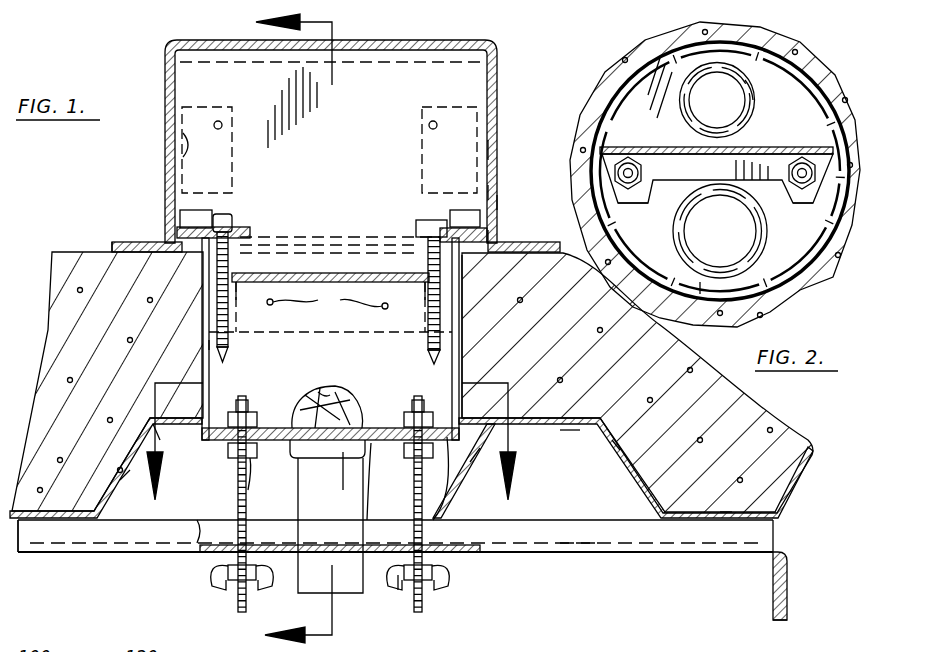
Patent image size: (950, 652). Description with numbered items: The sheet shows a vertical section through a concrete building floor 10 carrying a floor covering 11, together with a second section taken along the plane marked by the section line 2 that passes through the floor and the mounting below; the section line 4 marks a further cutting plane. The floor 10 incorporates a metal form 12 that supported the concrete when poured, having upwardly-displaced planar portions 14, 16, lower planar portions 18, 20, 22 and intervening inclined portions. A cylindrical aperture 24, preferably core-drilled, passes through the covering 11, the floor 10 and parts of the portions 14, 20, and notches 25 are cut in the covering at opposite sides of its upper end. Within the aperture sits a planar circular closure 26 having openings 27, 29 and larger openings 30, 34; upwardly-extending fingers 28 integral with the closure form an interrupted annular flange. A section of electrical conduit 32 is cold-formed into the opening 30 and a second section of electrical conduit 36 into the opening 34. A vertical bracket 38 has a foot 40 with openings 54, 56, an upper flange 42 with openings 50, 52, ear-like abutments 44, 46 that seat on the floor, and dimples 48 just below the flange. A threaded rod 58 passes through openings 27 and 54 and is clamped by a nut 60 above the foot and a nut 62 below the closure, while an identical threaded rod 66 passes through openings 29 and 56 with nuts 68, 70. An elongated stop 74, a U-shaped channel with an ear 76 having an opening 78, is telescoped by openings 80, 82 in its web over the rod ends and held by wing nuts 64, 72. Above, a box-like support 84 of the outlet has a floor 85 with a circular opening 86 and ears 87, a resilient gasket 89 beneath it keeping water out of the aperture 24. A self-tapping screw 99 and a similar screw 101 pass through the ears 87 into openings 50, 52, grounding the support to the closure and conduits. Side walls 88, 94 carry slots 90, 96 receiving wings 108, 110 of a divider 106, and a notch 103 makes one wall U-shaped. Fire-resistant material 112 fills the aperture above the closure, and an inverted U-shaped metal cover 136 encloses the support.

In FIG. 1, the section line 2- 2 is at (330, 449).
In FIG. 1, the section line 4- 4 is at (284, 331).
In FIG. 1, the floor 10 is at (762, 430).
In FIG. 2, the floor 10 is at (622, 48).
In FIG. 1, the floor covering 11 is at (112, 242).
In FIG. 1, the metal form 12 is at (638, 462).
In FIG. 1, the upwardly-displaced planar portion 14 is at (170, 425).
In FIG. 1, the upwardly-displaced planar portion 16 is at (566, 427).
In FIG. 1, the lower planar portion 18 is at (34, 521).
In FIG. 1, the lower planar portion 20 is at (452, 554).
In FIG. 1, the lower planar portion 22 is at (730, 520).
In FIG. 1, the cylindrical aperture 24 is at (209, 345).
In FIG. 1, the notches 25 is at (508, 249).
In FIG. 1, the closure 26 is at (375, 450).
In FIG. 2, the closure 26 is at (805, 80).
In FIG. 1, the opening 27 is at (238, 455).
In FIG. 1, the fingers 28 is at (200, 419).
In FIG. 2, the fingers 28 is at (603, 132).
In FIG. 1, the opening 29 is at (468, 470).
In FIG. 2, the opening 30 is at (712, 300).
In FIG. 2, the section of electrical conduit 32 is at (720, 231).
In FIG. 2, the opening 34 is at (755, 93).
In FIG. 1, the section of electrical conduit 36 is at (363, 598).
In FIG. 2, the section of electrical conduit 36 is at (717, 100).
In FIG. 1, the bracket 38 is at (353, 364).
In FIG. 2, the bracket 38 is at (762, 148).
In FIG. 1, the foot 40 is at (362, 428).
In FIG. 2, the foot 40 is at (662, 186).
In FIG. 1, the upper flange 42 is at (352, 223).
In FIG. 1, the abutment 44 is at (107, 381).
In FIG. 1, the abutment 46 is at (472, 262).
In FIG. 1, the dimples 48 is at (330, 293).
In FIG. 1, the opening 50 is at (238, 290).
In FIG. 1, the opening 52 is at (410, 290).
In FIG. 1, the opening 54 is at (258, 420).
In FIG. 1, the opening 56 is at (406, 420).
In FIG. 1, the threaded rod 58 is at (238, 602).
In FIG. 2, the threaded rod 58 is at (632, 162).
In FIG. 1, the nut 60 is at (228, 420).
In FIG. 2, the nut 60 is at (627, 205).
In FIG. 1, the nut 62 is at (252, 458).
In FIG. 1, the wing nut 64 is at (212, 586).
In FIG. 1, the threaded rod 66 is at (419, 614).
In FIG. 2, the threaded rod 66 is at (795, 200).
In FIG. 1, the nut 68 is at (432, 420).
In FIG. 2, the nut 68 is at (800, 187).
In FIG. 1, the nut 70 is at (450, 490).
In FIG. 1, the wing nut 72 is at (445, 592).
In FIG. 1, the elongated stop 74 is at (575, 554).
In FIG. 1, the ear 76 is at (778, 621).
In FIG. 1, the opening 78 is at (789, 586).
In FIG. 1, the opening 80 is at (238, 540).
In FIG. 1, the opening 82 is at (392, 596).
In FIG. 1, the support 84 is at (462, 210).
In FIG. 1, the floor 85 is at (203, 210).
In FIG. 1, the circular opening 86 is at (290, 230).
In FIG. 1, the ears 87 is at (250, 228).
In FIG. 1, the side wall 88 is at (184, 143).
In FIG. 1, the gasket 89 is at (495, 240).
In FIG. 1, the slot 90 is at (176, 211).
In FIG. 1, the side wall 94 is at (499, 150).
In FIG. 1, the slot 96 is at (497, 200).
In FIG. 1, the self-tapping screw 99 is at (240, 214).
In FIG. 1, the screw 101 is at (428, 348).
In FIG. 1, the notch 103 is at (420, 119).
In FIG. 1, the divider 106 is at (342, 163).
In FIG. 1, the wing 108 is at (195, 193).
In FIG. 1, the wing 110 is at (470, 205).
In FIG. 1, the fire-resistant material 112 is at (318, 392).
In FIG. 1, the metal cover 136 is at (420, 48).